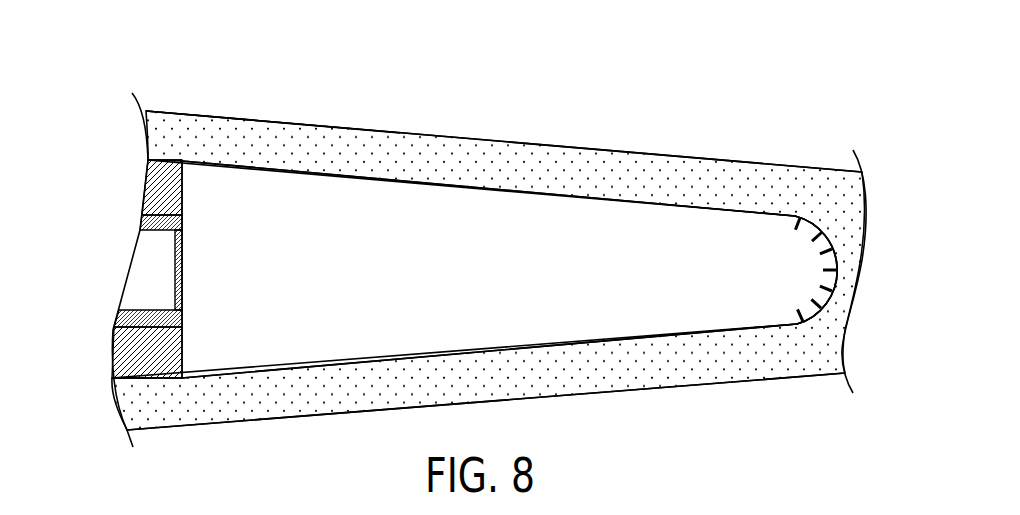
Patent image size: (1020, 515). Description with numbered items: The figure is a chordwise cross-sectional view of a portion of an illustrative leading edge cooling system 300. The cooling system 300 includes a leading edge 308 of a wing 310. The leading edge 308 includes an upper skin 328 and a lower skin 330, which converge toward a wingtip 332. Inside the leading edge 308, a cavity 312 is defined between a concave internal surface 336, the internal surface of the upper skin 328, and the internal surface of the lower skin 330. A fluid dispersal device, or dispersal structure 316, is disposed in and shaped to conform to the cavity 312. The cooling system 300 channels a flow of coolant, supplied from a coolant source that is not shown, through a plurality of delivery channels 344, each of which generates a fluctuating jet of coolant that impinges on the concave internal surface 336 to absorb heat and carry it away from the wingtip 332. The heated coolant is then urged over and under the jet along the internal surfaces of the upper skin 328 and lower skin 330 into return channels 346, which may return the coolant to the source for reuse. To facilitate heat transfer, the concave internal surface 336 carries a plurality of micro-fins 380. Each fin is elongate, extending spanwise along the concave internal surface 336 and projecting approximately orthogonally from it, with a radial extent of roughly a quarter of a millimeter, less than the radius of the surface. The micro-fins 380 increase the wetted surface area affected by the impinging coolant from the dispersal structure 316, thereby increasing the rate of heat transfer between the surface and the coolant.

The cooling system 300 is at (137, 66).
The leading edge 308 is at (800, 398).
The wing 310 is at (255, 92).
The cavity 312 is at (645, 222).
The dispersal structure 316 is at (145, 223).
The upper skin 328 is at (348, 150).
The lower skin 330 is at (203, 405).
The wingtip 332 is at (857, 198).
The concave internal surface 336 is at (848, 257).
The delivery channels 344 is at (163, 272).
The return channels 346 is at (163, 200).
The micro-fins 380 is at (815, 238).